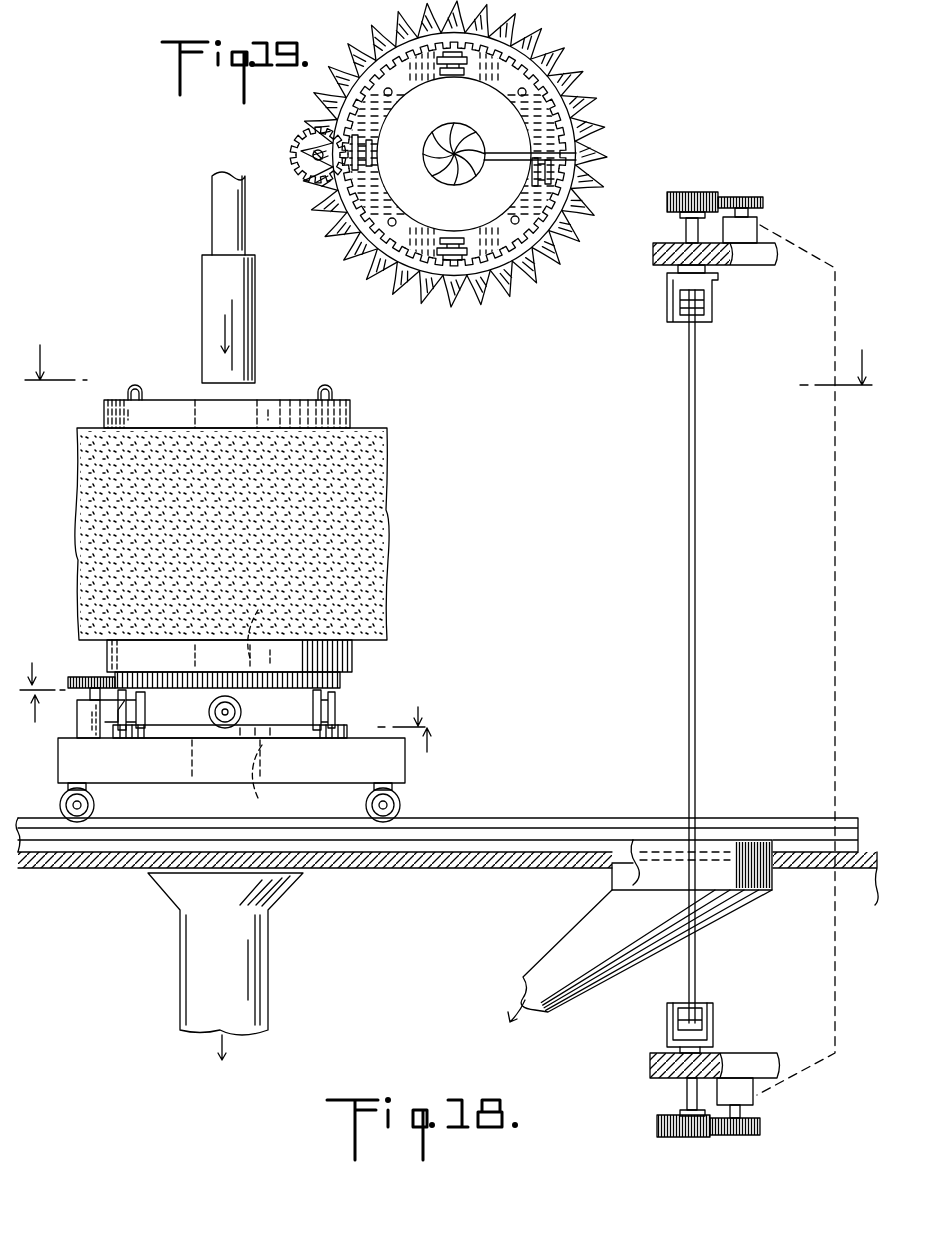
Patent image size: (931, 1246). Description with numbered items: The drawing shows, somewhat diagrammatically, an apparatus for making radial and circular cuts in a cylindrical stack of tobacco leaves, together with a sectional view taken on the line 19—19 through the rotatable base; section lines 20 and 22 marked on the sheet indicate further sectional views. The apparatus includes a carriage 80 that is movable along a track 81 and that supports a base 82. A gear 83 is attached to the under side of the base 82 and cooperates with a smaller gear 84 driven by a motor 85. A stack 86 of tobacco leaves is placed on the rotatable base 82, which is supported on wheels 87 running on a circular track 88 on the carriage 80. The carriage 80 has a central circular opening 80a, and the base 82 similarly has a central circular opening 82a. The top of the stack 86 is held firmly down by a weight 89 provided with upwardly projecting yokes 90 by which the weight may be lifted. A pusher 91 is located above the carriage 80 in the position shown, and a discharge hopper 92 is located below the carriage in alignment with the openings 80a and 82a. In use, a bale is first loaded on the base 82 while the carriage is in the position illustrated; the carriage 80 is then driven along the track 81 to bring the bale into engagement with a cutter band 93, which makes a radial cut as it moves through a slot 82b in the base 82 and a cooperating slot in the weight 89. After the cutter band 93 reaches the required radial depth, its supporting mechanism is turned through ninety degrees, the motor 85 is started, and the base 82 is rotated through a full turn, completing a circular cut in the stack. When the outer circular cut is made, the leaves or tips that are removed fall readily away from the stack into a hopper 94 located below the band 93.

In FIG. 18, the carriage 80 is at (385, 771).
In FIG. 18, the central circular opening 80a is at (276, 781).
In FIG. 18, the track 81 is at (545, 828).
In FIG. 19, the base 82 is at (552, 92).
In FIG. 18, the base 82 is at (352, 658).
In FIG. 18, the central circular opening 82a is at (276, 621).
In FIG. 19, the slot 82b is at (572, 153).
In FIG. 19, the gear 83 is at (505, 255).
In FIG. 18, the gear 83 is at (340, 680).
In FIG. 19, the smaller gear 84 is at (300, 153).
In FIG. 18, the smaller gear 84 is at (81, 676).
In FIG. 18, the motor 85 is at (80, 716).
In FIG. 19, the stack 86 is at (535, 43).
In FIG. 18, the stack 86 is at (385, 517).
In FIG. 19, the wheels 87 is at (560, 180).
In FIG. 18, the wheels 87 is at (128, 707).
In FIG. 18, the circular track 88 is at (276, 728).
In FIG. 18, the weight 89 is at (355, 411).
In FIG. 18, the yokes 90 is at (134, 382).
In FIG. 18, the pusher 91 is at (211, 286).
In FIG. 18, the discharge hopper 92 is at (276, 896).
In FIG. 18, the cutter band 93 is at (699, 454).
In FIG. 18, the hopper 94 is at (727, 905).
In FIG. 18, the section line 19 is at (233, 726).
In FIG. 18, the section line 20 is at (450, 353).
In FIG. 18, the section line 22 is at (226, 681).